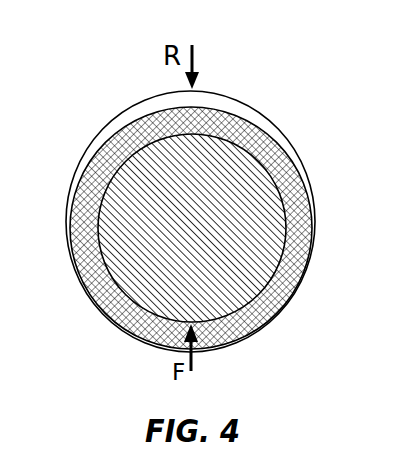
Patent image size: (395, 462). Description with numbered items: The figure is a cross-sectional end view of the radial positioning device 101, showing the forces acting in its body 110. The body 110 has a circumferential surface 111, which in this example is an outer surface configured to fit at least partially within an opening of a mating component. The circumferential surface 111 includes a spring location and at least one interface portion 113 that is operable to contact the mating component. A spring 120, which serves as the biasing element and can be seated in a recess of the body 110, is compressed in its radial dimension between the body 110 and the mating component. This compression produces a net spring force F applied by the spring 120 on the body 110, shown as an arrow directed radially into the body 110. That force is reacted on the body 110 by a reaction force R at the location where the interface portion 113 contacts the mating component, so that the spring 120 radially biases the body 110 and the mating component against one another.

The radial positioning device 101 is at (183, 194).
The body 110 is at (107, 102).
The circumferential surface 111 is at (263, 111).
The interface portion 113 is at (193, 91).
The spring 120 is at (247, 333).